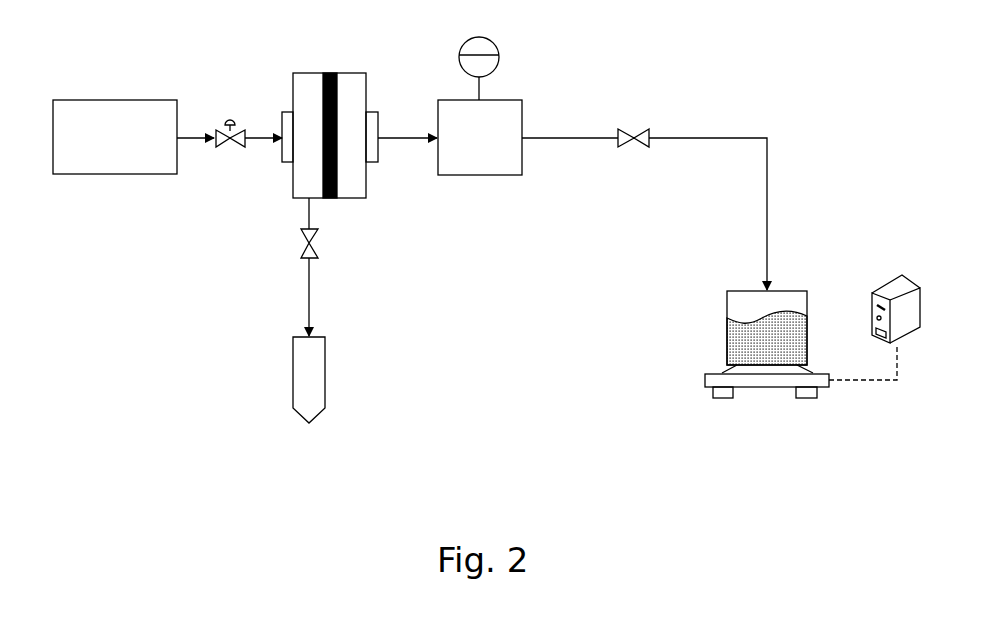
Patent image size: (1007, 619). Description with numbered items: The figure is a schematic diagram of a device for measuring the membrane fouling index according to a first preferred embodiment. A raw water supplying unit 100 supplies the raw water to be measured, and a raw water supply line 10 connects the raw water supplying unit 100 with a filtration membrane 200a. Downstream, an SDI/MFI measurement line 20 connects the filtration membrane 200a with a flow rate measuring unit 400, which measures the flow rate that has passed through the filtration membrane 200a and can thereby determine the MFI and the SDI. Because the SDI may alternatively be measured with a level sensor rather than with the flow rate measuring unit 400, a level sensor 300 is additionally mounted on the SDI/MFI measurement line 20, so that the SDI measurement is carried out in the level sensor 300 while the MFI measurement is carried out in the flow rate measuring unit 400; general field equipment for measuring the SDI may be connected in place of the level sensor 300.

The raw water supplying unit 100 is at (113, 100).
The raw water supply line 10 is at (262, 139).
The filtration membrane 200a is at (347, 73).
The level sensor 300 is at (504, 100).
The SDI/MFI measurement line 20 is at (704, 137).
The flow rate measuring unit 400 is at (727, 338).